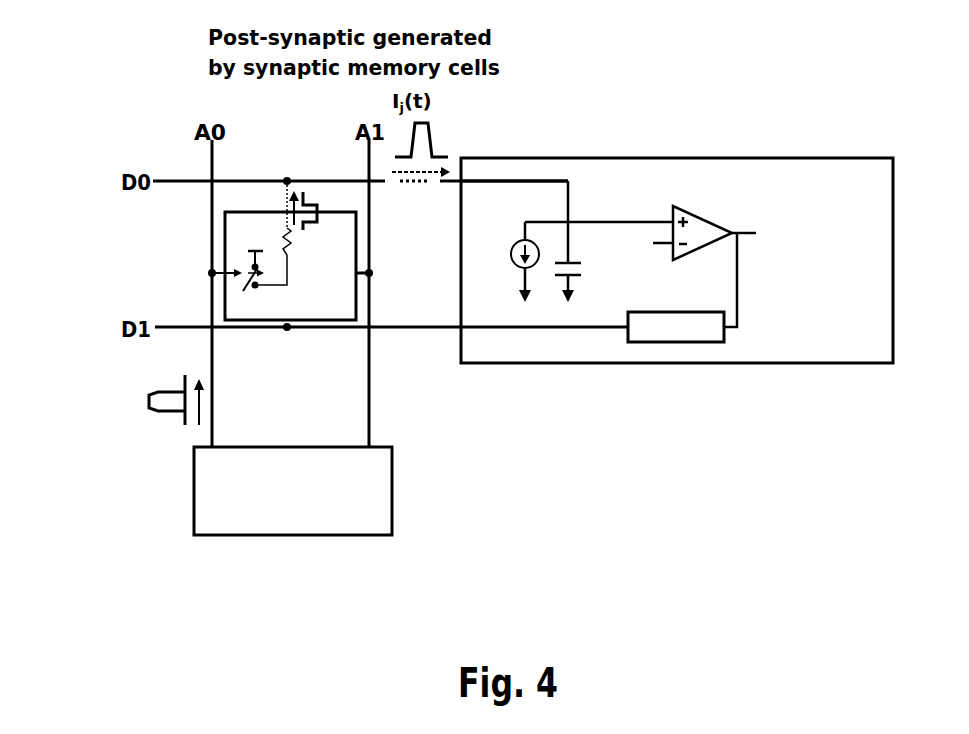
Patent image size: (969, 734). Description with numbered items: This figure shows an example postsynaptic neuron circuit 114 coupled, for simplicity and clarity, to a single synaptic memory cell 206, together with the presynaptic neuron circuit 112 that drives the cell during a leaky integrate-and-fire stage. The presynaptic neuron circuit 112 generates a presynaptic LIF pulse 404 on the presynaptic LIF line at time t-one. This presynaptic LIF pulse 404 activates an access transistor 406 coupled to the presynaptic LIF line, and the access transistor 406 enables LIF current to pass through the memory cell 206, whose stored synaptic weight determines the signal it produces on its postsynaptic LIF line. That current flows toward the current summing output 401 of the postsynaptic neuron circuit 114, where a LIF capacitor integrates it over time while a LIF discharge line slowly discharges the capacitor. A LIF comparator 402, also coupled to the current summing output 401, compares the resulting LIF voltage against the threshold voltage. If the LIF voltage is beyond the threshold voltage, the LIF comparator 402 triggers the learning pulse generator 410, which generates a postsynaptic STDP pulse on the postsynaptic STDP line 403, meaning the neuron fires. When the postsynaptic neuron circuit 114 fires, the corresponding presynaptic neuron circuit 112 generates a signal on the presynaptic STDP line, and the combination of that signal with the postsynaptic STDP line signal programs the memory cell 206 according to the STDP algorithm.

The presynaptic neuron circuit 112 is at (323, 536).
The postsynaptic neuron circuit 114 is at (640, 364).
The synaptic memory cell 206 is at (228, 255).
The current summing output 401 is at (530, 181).
The LIF comparator 402 is at (688, 208).
The postsynaptic STDP line 403 is at (746, 232).
The presynaptic LIF pulse 404 is at (136, 400).
The access transistor 406 is at (235, 250).
The learning pulse generator 410 is at (703, 344).